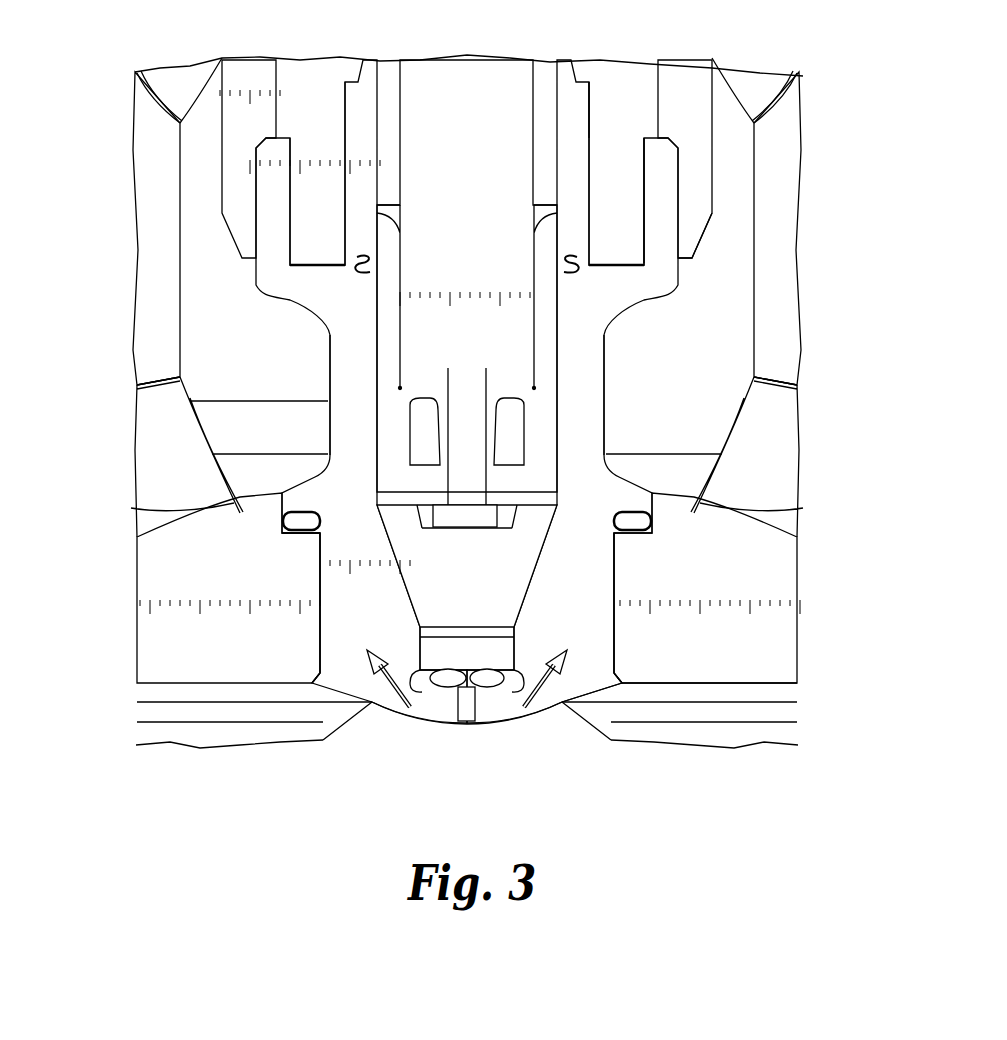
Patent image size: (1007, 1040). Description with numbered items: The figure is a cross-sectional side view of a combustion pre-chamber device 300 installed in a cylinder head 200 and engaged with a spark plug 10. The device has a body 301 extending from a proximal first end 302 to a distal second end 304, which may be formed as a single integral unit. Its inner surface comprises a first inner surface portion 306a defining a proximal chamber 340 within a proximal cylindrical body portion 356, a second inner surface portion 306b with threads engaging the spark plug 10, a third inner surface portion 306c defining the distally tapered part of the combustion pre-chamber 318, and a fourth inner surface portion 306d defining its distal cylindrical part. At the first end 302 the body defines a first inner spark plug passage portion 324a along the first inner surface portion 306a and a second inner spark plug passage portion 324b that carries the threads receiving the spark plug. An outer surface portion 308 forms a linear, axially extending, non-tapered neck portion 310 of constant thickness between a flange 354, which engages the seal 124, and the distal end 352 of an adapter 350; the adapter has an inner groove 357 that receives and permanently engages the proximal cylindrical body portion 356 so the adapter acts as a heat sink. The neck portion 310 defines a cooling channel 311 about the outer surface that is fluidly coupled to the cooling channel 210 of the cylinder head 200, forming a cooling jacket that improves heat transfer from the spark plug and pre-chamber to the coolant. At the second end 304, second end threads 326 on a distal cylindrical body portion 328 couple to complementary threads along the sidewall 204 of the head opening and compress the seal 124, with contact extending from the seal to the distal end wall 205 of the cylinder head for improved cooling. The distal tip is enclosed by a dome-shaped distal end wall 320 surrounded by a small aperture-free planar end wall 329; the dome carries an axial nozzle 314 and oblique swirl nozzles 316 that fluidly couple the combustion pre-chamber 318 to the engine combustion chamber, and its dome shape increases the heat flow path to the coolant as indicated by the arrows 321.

The spark plug 10 is at (497, 97).
The seal 124 is at (277, 518).
The cylinder head 200 is at (718, 612).
The sidewall 204 is at (653, 665).
The distal end wall 205 is at (193, 684).
The cooling channel 210 is at (157, 418).
The combustion pre-chamber device 300 is at (617, 600).
The body 301 is at (617, 633).
The first end 302 is at (612, 130).
The second end 304 is at (372, 703).
The first inner surface portion 306a is at (662, 212).
The second inner surface portion 306b is at (327, 363).
The third inner surface portion 306c is at (375, 550).
The fourth inner surface portion 306d is at (377, 627).
The outer surface portion 308 is at (663, 410).
The neck portion 310 is at (328, 388).
The cooling channel 311 is at (606, 400).
The axial nozzle 314 is at (467, 700).
The swirl nozzle 316 is at (430, 703).
The combustion pre-chamber 318 is at (486, 591).
The distal end wall 320 is at (403, 705).
The arrows 321 is at (370, 702).
The first inner spark plug passage portion 324a is at (612, 158).
The second inner spark plug passage portion 324b is at (687, 302).
The second end threads 326 is at (590, 685).
The distal cylindrical body portion 328 is at (337, 600).
The planar end wall 329 is at (600, 690).
The proximal chamber 340 is at (320, 187).
The adapter 350 is at (223, 155).
The distal end 352 is at (247, 248).
The flange 354 is at (623, 487).
The proximal cylindrical body portion 356 is at (663, 210).
The inner groove 357 is at (255, 195).